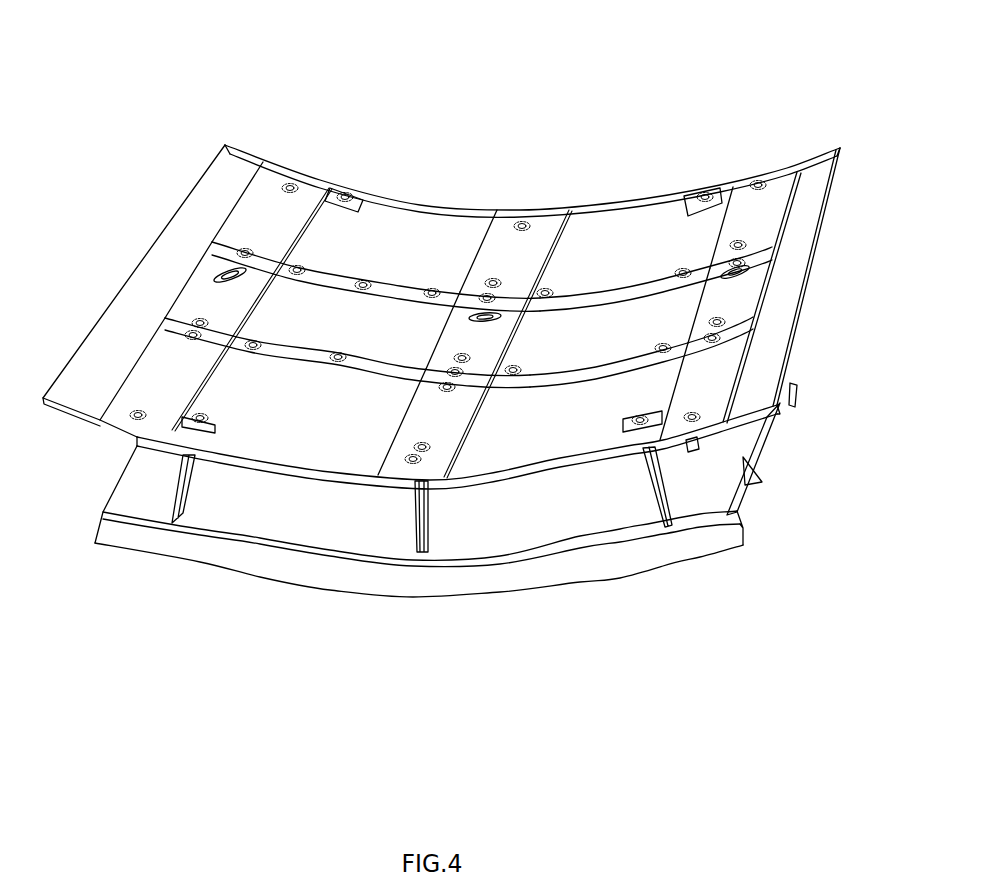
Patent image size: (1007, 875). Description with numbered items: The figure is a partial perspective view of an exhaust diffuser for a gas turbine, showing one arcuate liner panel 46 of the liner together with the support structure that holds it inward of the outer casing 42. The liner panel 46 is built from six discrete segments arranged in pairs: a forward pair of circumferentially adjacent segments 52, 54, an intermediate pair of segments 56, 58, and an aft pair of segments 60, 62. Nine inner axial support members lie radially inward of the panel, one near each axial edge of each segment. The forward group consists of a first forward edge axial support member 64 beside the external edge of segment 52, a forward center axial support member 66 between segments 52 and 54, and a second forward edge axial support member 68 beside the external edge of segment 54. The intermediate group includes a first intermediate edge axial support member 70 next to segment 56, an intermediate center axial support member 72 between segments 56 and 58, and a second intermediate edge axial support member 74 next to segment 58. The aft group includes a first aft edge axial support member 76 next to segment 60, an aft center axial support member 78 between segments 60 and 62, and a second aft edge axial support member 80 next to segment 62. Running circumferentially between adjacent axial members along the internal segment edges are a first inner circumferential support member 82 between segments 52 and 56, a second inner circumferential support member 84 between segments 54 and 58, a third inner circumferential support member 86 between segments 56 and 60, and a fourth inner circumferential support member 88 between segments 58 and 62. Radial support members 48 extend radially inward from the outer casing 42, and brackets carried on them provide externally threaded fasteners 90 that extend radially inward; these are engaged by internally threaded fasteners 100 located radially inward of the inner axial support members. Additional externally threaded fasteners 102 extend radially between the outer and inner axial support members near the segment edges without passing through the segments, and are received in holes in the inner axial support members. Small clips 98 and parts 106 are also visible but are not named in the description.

The outer casing 42 is at (140, 490).
The liner panel 46 is at (227, 167).
The radial support member 48 is at (183, 510).
The forward segment 52 is at (389, 251).
The forward segment 54 is at (611, 251).
The intermediate segment 56 is at (347, 344).
The intermediate segment 58 is at (566, 334).
The aft segment 60 is at (300, 422).
The aft segment 62 is at (547, 429).
The first forward edge axial support member 64 is at (258, 198).
The forward center axial support member 66 is at (538, 232).
The second forward edge axial support member 68 is at (735, 197).
The first intermediate edge axial support member 70 is at (200, 288).
The intermediate center axial support member 72 is at (458, 336).
The second intermediate edge axial support member 74 is at (745, 290).
The first aft edge axial support member 76 is at (140, 380).
The aft center axial support member 78 is at (453, 409).
The second aft edge axial support member 80 is at (722, 383).
The first inner circumferential support member 82 is at (388, 291).
The second inner circumferential support member 84 is at (647, 288).
The third inner circumferential support member 86 is at (350, 364).
The fourth inner circumferential support member 88 is at (645, 358).
The threaded fastener 90 is at (347, 197).
The bracket 98 is at (362, 202).
The internally threaded fastener 100 is at (415, 449).
The externally threaded fastener 102 is at (289, 182).
The fastener 106 is at (284, 180).